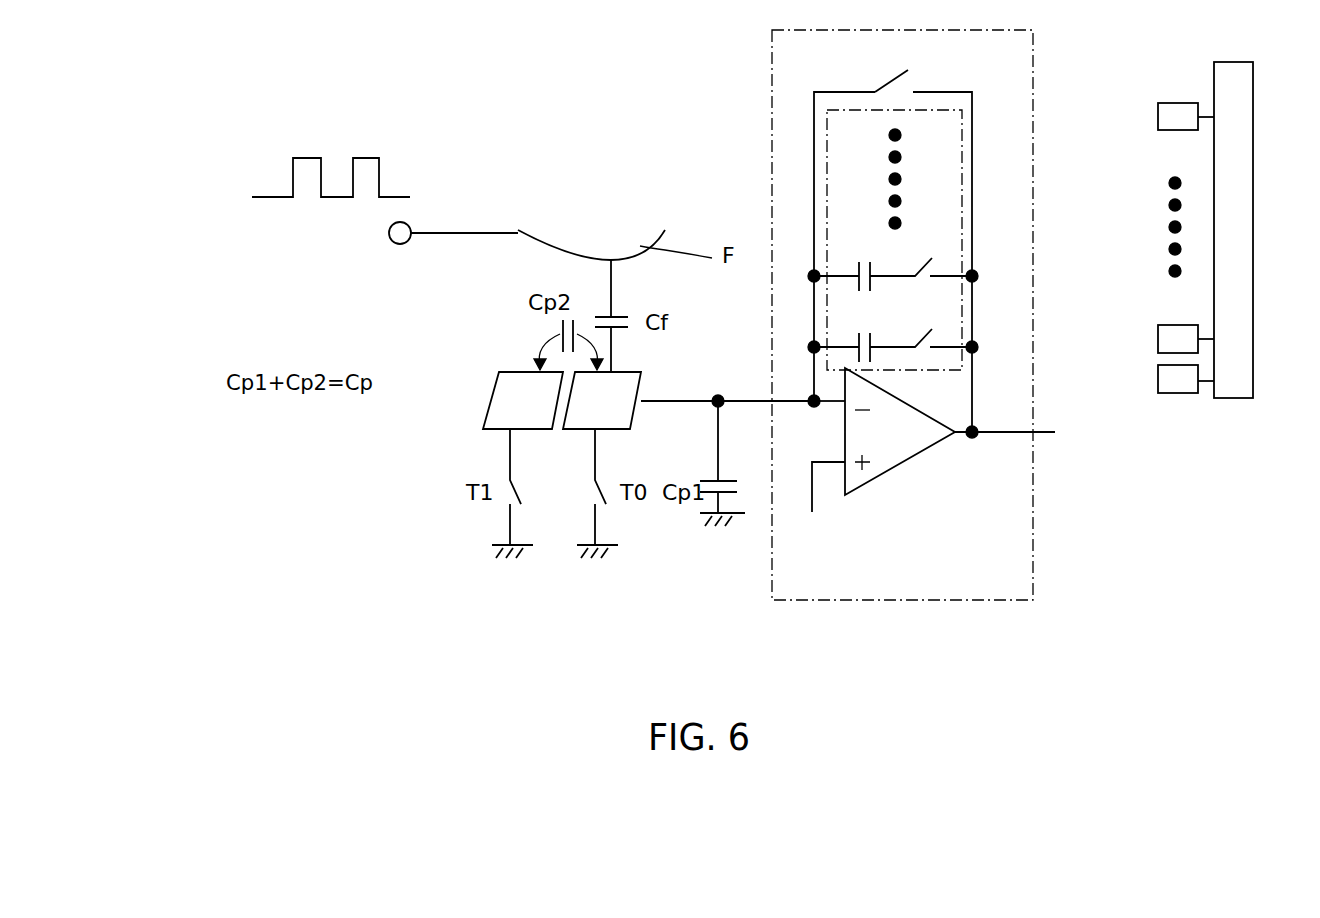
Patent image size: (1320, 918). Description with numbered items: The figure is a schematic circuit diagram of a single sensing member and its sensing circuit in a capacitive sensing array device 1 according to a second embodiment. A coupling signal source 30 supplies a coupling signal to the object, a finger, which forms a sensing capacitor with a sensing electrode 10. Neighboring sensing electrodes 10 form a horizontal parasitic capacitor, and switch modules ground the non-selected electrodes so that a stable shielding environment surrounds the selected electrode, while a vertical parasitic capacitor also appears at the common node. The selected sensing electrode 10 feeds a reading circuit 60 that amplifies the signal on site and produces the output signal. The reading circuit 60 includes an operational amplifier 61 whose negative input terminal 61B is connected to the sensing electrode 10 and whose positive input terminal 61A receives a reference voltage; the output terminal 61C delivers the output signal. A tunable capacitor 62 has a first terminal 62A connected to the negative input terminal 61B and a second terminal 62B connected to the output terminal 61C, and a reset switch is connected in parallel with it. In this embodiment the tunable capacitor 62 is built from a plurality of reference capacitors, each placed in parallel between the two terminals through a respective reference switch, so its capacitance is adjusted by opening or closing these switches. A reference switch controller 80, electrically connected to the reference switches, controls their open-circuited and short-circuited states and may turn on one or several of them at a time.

The capacitive sensing array device 1 is at (715, 134).
The sensing electrode 10 is at (497, 392).
The coupling signal source 30 is at (272, 236).
The reading circuit 60 is at (1033, 178).
The operational amplifier 61 is at (933, 468).
The positive input terminal 61A is at (857, 478).
The negative input terminal 61B is at (873, 415).
The output terminal 61C is at (942, 436).
The tunable capacitor 62 is at (962, 305).
The first terminal 62A is at (814, 276).
The second terminal 62B is at (972, 276).
The reference switch controller 80 is at (1232, 62).